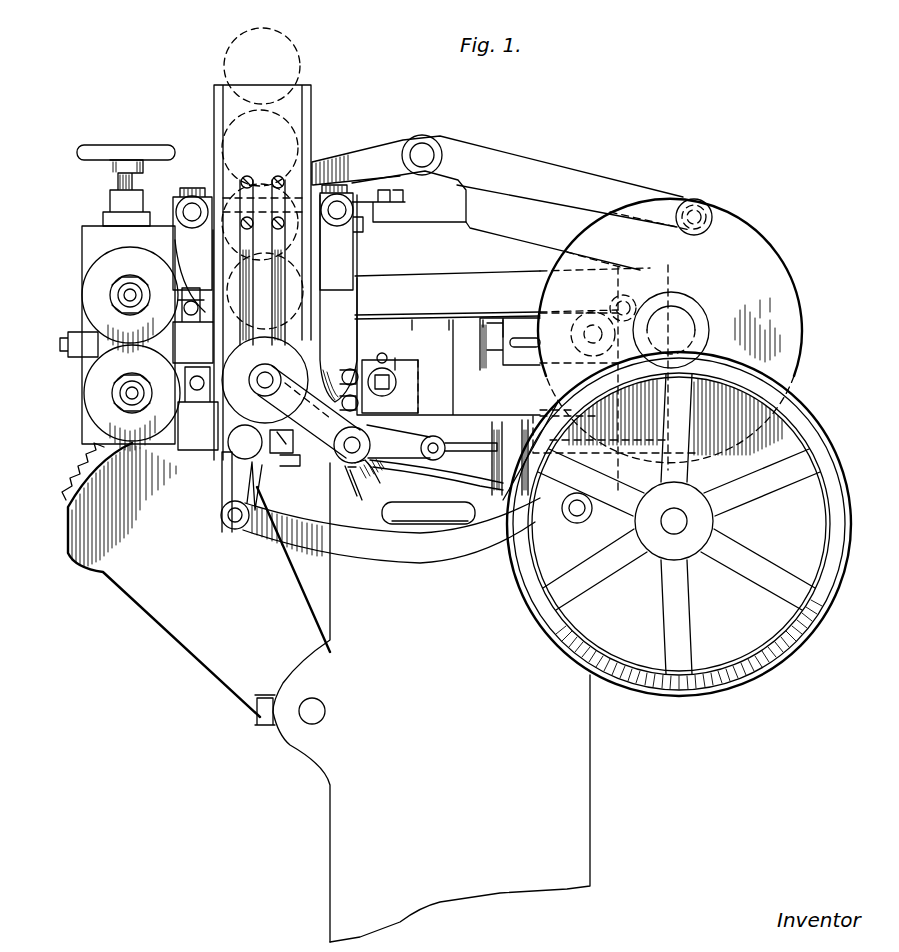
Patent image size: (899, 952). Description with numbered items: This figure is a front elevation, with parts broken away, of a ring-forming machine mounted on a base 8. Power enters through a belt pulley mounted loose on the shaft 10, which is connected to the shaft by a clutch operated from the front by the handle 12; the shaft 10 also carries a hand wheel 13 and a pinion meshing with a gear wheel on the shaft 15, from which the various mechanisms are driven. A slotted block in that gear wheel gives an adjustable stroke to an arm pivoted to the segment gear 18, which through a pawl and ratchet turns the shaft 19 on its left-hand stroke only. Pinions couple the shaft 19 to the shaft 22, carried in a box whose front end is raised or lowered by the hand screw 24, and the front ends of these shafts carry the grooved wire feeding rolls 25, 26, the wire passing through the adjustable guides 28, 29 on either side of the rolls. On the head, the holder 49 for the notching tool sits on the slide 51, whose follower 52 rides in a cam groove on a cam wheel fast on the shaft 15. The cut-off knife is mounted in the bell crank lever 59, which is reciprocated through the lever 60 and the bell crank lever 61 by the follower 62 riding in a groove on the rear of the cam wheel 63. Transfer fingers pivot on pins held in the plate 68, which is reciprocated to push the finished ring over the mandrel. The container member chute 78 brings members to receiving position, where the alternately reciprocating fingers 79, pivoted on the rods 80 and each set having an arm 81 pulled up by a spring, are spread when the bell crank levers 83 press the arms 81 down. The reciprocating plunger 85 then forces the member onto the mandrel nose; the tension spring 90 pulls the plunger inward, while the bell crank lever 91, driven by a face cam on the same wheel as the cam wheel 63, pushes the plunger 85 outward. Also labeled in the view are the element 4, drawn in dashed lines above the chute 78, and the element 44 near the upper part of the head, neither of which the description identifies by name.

The rolls of material 4 is at (284, 52).
The base 8 is at (422, 702).
The shaft 10 is at (680, 519).
The handle 12 is at (432, 498).
The hand wheel 13 is at (668, 702).
The shaft 15 is at (683, 322).
The segment gear 18 is at (196, 580).
The shaft 19 is at (128, 396).
The shaft 22 is at (130, 290).
The hand screw 24 is at (95, 145).
The wire feeding roll 25 is at (132, 398).
The wire feeding roll 26 is at (129, 335).
The adjustable guide 28 is at (82, 346).
The adjustable guide 29 is at (195, 369).
The block 44 is at (440, 204).
The holder 49 is at (397, 370).
The slide 51 is at (448, 346).
The follower 52 is at (592, 313).
The bell crank lever 59 is at (235, 486).
The lever 60 is at (406, 552).
The bell crank lever 61 is at (578, 380).
The follower 62 is at (646, 294).
The cam wheel 63 is at (788, 372).
The plate 68 is at (345, 450).
The container member chute 78 is at (311, 112).
The alternately reciprocating fingers 79 is at (187, 242).
The rod 80 is at (186, 198).
The arm 81 is at (210, 196).
The bell crank lever 83 is at (606, 186).
The reciprocating plunger 85 is at (291, 401).
The tension spring 90 is at (368, 488).
The bell crank lever 91 is at (455, 460).